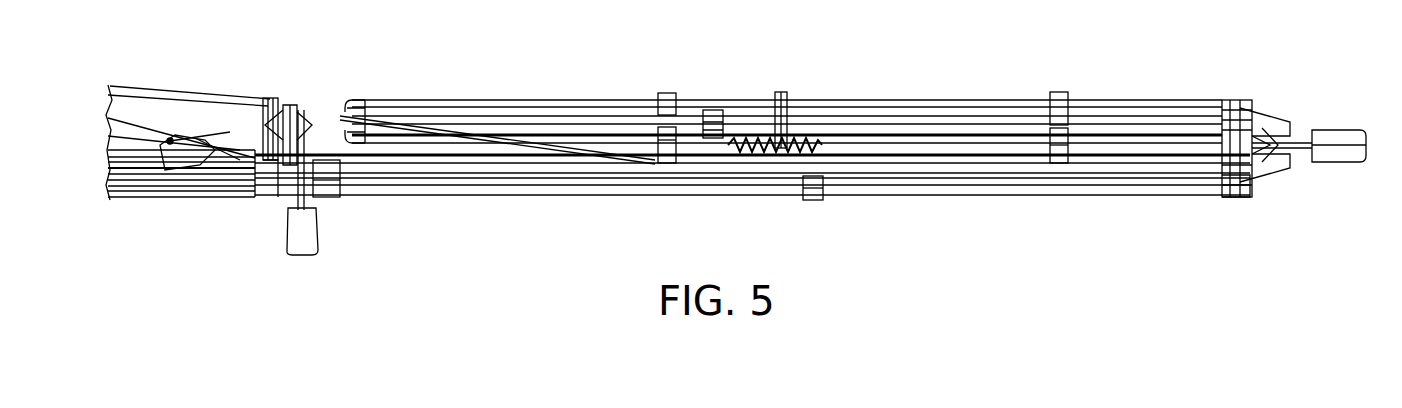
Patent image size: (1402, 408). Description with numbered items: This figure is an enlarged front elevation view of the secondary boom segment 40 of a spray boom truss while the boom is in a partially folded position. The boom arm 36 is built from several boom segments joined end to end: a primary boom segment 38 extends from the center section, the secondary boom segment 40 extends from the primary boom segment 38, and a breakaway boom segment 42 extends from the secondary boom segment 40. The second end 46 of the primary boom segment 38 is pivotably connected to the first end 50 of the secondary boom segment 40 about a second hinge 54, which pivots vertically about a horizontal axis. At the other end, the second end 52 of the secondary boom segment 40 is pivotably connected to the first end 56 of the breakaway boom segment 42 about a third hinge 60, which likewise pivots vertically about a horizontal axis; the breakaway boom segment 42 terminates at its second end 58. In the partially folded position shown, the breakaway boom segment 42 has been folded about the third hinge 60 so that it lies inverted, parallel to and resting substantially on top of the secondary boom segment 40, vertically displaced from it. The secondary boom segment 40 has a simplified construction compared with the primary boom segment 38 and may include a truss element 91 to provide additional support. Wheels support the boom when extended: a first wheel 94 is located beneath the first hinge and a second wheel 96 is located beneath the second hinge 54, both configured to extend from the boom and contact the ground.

The boom arm 36 is at (433, 223).
The primary boom segment 38 is at (147, 198).
The secondary boom segment 40 is at (957, 190).
The breakaway boom segment 42 is at (951, 112).
The second end of primary boom segment 46 is at (245, 198).
The first end of secondary boom segment 50 is at (332, 176).
The second end of secondary boom segment 52 is at (1213, 190).
The second hinge 54 is at (289, 110).
The first end of breakaway boom segment 56 is at (1208, 100).
The second end of breakaway boom segment 58 is at (352, 100).
The third hinge 60 is at (1290, 140).
The truss element 91 is at (457, 142).
The first wheel 94 is at (297, 256).
The second wheel 96 is at (1335, 163).